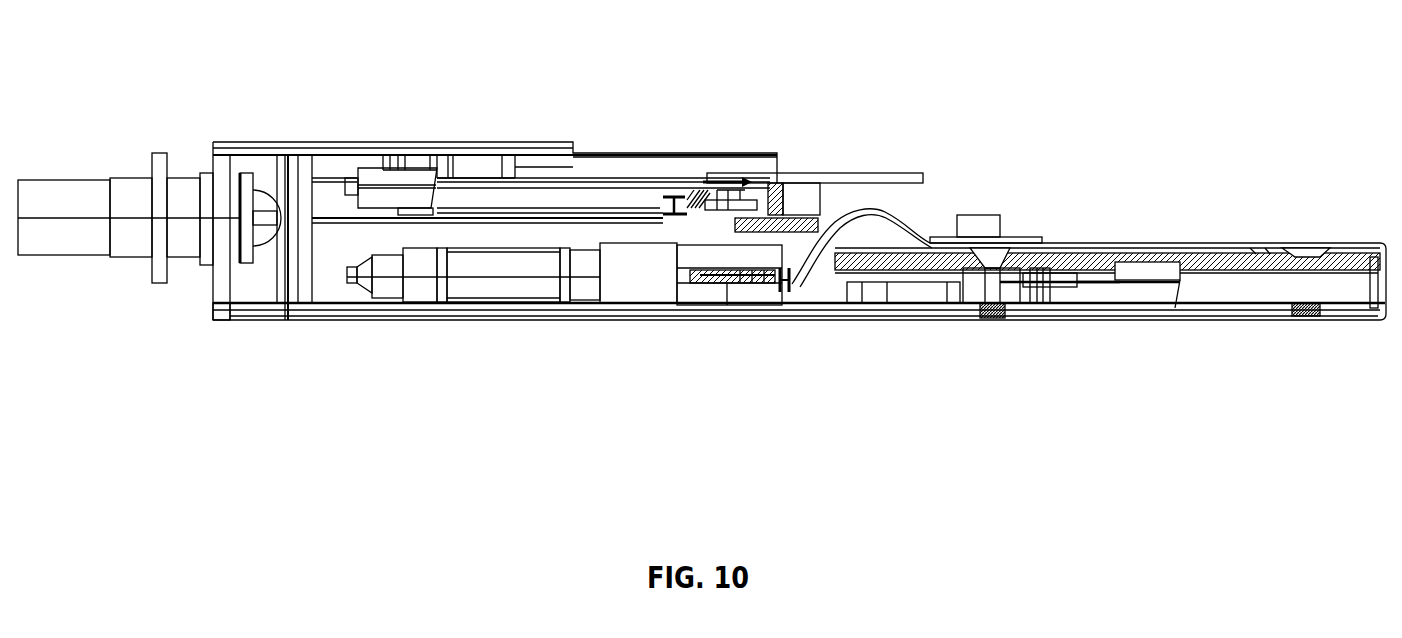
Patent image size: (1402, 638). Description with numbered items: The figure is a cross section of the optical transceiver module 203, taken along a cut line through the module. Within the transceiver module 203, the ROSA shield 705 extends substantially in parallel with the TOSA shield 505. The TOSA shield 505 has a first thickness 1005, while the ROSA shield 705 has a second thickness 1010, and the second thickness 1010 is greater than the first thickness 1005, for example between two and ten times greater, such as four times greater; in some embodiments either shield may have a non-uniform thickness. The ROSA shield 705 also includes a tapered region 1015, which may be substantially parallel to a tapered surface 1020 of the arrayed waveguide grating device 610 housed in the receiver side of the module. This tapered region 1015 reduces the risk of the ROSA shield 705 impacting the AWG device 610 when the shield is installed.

The transceiver module 203 is at (268, 46).
The arrayed waveguide grating (AWG) device 610 is at (459, 153).
The second thickness 1010 is at (667, 202).
The tapered surface 1020 is at (683, 178).
The tapered region 1015 is at (699, 186).
The ROSA shield 705 is at (756, 200).
The TOSA shield 505 is at (705, 262).
The first thickness 1005 is at (790, 282).